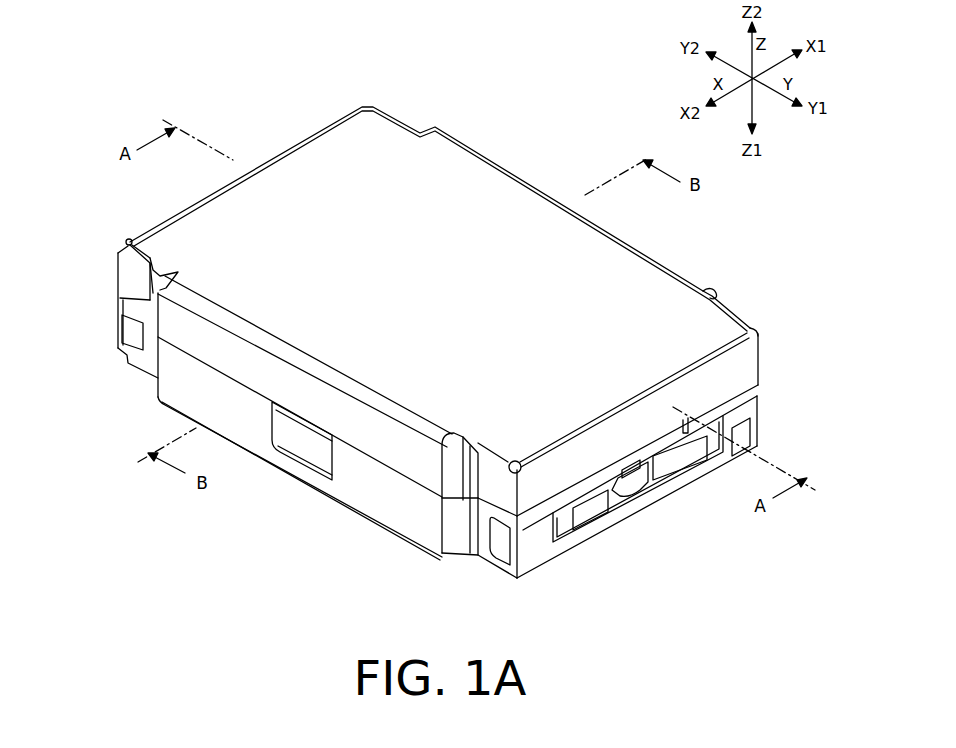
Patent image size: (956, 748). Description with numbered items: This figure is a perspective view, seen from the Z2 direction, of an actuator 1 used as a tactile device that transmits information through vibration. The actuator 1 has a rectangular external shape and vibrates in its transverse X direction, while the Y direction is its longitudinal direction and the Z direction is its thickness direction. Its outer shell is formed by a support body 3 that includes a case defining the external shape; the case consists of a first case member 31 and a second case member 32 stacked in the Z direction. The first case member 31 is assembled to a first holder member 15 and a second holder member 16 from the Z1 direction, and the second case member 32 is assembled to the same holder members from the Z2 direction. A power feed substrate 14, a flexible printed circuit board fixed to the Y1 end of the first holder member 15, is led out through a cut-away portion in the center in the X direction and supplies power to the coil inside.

The actuator 1 is at (258, 78).
The support body 3 is at (483, 140).
The power feed substrate 14 is at (640, 487).
The first holder member 15 is at (533, 517).
The second holder member 16 is at (120, 300).
The first case member 31 is at (393, 514).
The second case member 32 is at (663, 288).